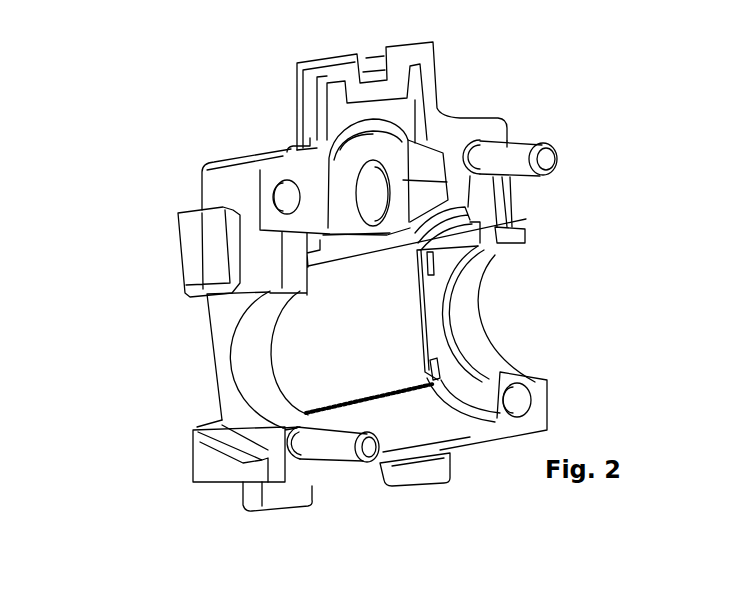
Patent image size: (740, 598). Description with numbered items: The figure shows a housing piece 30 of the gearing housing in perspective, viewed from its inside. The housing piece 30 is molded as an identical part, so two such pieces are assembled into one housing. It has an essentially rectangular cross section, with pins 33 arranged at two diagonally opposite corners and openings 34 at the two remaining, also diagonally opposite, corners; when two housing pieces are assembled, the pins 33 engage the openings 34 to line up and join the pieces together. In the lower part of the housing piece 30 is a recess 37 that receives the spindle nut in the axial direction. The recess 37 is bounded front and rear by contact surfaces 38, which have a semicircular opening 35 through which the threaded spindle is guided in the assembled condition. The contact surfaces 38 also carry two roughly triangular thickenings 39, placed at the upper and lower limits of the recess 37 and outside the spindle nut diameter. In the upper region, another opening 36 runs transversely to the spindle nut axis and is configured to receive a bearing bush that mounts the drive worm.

The housing piece 30 is at (168, 127).
The pin 33 is at (513, 152).
The opening 34 is at (283, 195).
The semicircular opening 35 is at (258, 363).
The opening 36 is at (340, 189).
The recess 37 is at (340, 327).
The contact surface 38 is at (428, 270).
The triangular thickening 39 is at (434, 258).